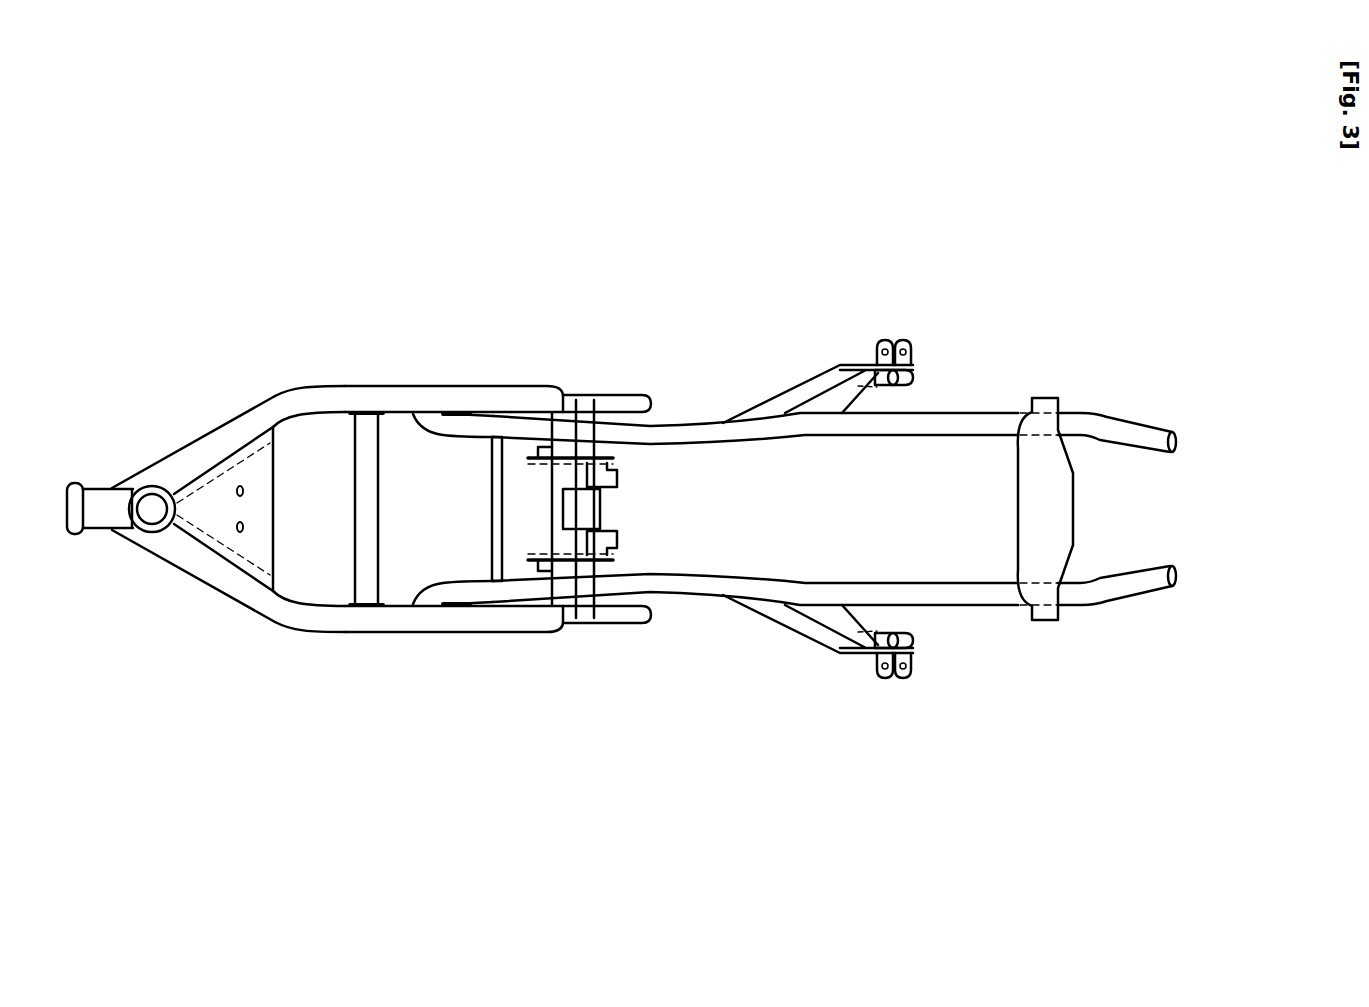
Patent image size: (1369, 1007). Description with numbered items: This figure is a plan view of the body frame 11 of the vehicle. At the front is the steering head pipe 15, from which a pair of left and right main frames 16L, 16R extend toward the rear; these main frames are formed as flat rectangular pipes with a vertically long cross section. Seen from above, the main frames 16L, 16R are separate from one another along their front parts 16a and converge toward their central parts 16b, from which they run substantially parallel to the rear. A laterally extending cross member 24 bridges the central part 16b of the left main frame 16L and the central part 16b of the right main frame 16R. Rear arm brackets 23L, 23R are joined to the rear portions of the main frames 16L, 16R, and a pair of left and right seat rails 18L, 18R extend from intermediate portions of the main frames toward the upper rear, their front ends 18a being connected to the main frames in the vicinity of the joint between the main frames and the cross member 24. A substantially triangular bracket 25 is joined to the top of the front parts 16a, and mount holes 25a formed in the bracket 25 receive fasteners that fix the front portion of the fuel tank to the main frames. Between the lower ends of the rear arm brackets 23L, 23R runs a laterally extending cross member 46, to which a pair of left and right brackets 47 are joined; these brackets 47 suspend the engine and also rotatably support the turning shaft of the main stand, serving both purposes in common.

The body frame 11 is at (543, 257).
The steering head pipe 15 is at (112, 497).
The front parts of the main frames 16a is at (190, 455).
The central parts of the main frames 16b is at (315, 405).
The right main frame 16R is at (455, 387).
The left main frame 16L is at (405, 632).
The right seat rail 18R is at (685, 430).
The left seat rail 18L is at (696, 585).
The front ends of the seat rails 18a is at (447, 430).
The right rear arm bracket 23R is at (612, 400).
The left rear arm bracket 23L is at (598, 623).
The cross member 24 is at (353, 500).
The bracket 25 is at (265, 460).
The mount holes 25a is at (246, 527).
The cross member 46 is at (557, 540).
The brackets 47 is at (613, 460).